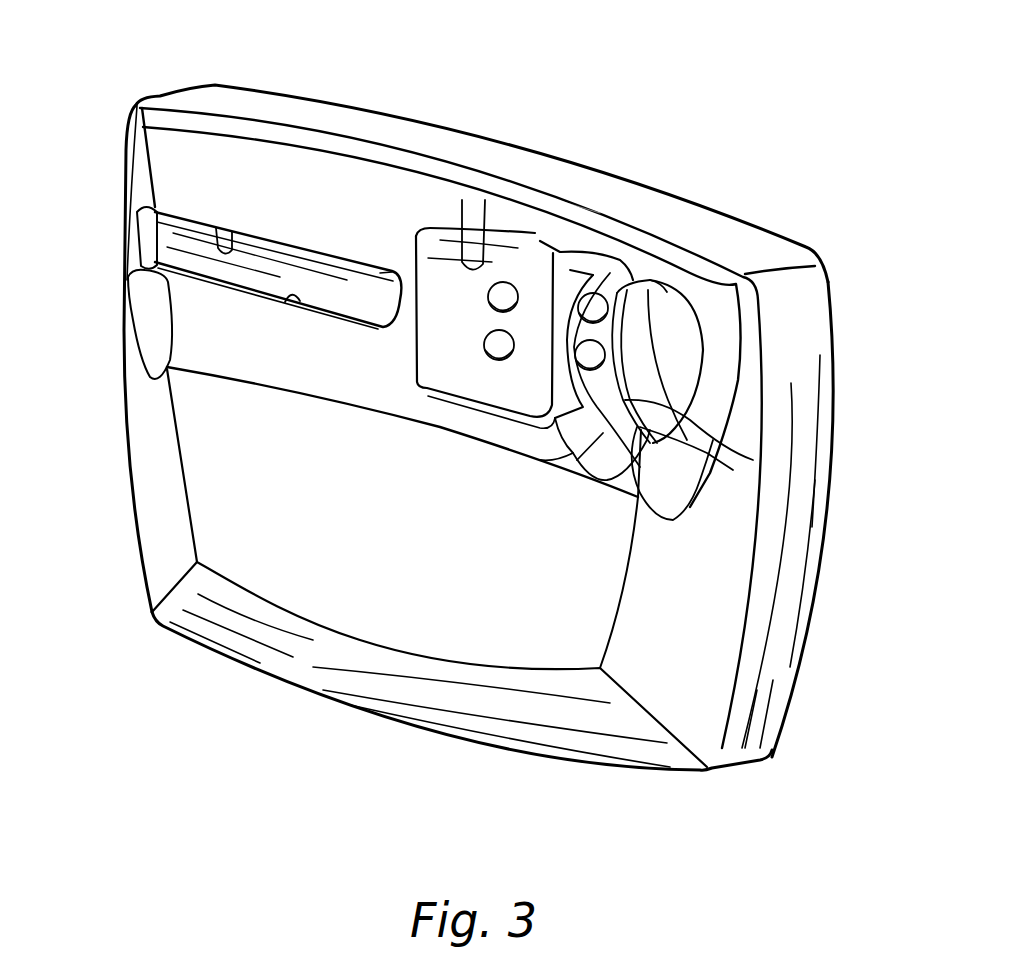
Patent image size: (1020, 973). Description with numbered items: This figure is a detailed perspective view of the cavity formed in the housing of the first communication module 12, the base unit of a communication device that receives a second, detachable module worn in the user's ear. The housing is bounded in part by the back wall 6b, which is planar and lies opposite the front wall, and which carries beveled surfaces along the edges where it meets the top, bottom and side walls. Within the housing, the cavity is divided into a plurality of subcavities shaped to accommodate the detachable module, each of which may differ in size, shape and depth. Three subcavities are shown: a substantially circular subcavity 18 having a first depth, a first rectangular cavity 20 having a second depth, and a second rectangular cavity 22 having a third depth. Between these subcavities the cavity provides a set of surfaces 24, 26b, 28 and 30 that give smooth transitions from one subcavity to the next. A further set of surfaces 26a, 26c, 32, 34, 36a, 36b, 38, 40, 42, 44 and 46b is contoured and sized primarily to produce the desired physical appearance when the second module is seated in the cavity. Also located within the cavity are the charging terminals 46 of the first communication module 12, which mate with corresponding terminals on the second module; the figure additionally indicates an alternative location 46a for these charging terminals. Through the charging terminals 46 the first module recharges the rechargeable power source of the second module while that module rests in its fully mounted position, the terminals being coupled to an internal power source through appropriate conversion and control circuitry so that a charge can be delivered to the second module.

The back wall 6b is at (330, 610).
The first communication module 12 is at (146, 699).
The circular subcavity 18 is at (688, 380).
The first rectangular cavity 20 is at (441, 362).
The second rectangular cavity 22 is at (325, 318).
The transition surface 24 is at (753, 460).
The contoured surface 26a is at (625, 478).
The transition surface 26b is at (580, 470).
The contoured surface 26c is at (628, 272).
The transition surface 28 is at (572, 268).
The transition surface 30 is at (390, 258).
The contoured surface 32 is at (226, 182).
The contoured surface 34 is at (690, 467).
The contoured surface 36a is at (514, 426).
The contoured surface 36b is at (486, 215).
The contoured surface 38 is at (350, 380).
The contoured surface 40 is at (150, 318).
The contoured surface 42 is at (143, 235).
The contoured surface 44 is at (137, 183).
The charging terminals 46 is at (642, 333).
The alternative charging terminal location 46a is at (290, 292).
The contoured surface 46b is at (234, 248).